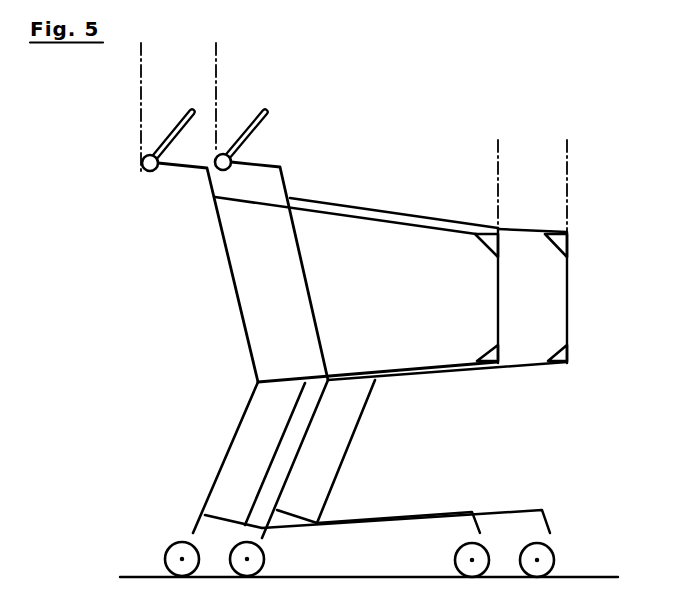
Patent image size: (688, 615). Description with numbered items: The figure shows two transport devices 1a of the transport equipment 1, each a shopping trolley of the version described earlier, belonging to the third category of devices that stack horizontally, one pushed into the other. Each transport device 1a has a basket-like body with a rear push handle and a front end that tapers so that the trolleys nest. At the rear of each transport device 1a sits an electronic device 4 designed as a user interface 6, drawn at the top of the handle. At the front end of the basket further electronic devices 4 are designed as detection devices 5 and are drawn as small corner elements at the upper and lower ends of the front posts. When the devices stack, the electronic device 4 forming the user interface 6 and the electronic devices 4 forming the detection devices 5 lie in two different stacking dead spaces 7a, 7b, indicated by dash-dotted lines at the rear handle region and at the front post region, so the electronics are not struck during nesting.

The transport equipment 1 is at (321, 369).
The transport device 1a is at (227, 318).
The electronic device 4 is at (380, 278).
The detection device 5 is at (565, 229).
The user interface 6 is at (180, 130).
The stacking dead space 7a is at (191, 71).
The stacking dead space 7b is at (549, 181).